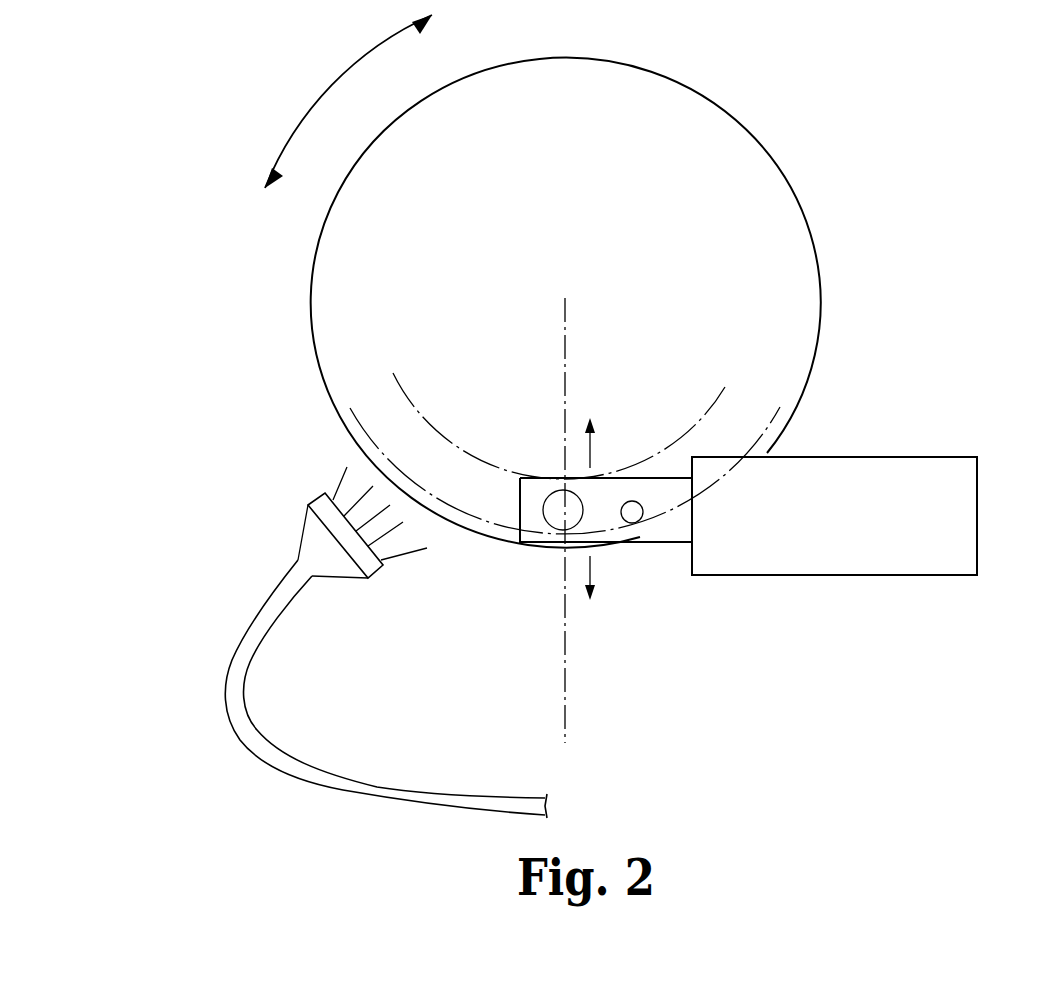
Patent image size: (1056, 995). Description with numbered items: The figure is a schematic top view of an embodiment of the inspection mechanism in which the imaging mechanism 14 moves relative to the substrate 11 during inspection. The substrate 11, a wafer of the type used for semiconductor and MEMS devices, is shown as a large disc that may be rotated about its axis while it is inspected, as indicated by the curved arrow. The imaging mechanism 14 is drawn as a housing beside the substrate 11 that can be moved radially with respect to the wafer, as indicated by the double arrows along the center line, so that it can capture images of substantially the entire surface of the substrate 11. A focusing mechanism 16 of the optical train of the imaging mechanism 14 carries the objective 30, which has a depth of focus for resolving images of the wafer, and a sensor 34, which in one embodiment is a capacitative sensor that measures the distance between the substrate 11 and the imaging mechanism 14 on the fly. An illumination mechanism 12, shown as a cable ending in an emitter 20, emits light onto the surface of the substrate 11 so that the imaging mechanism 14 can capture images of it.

The substrate 11 is at (778, 258).
The illumination mechanism 12 is at (210, 687).
The imaging mechanism 14 is at (988, 480).
The focusing mechanism 16 is at (498, 508).
The emitter 20 is at (306, 517).
The objective 30 is at (547, 522).
The sensor 34 is at (643, 513).